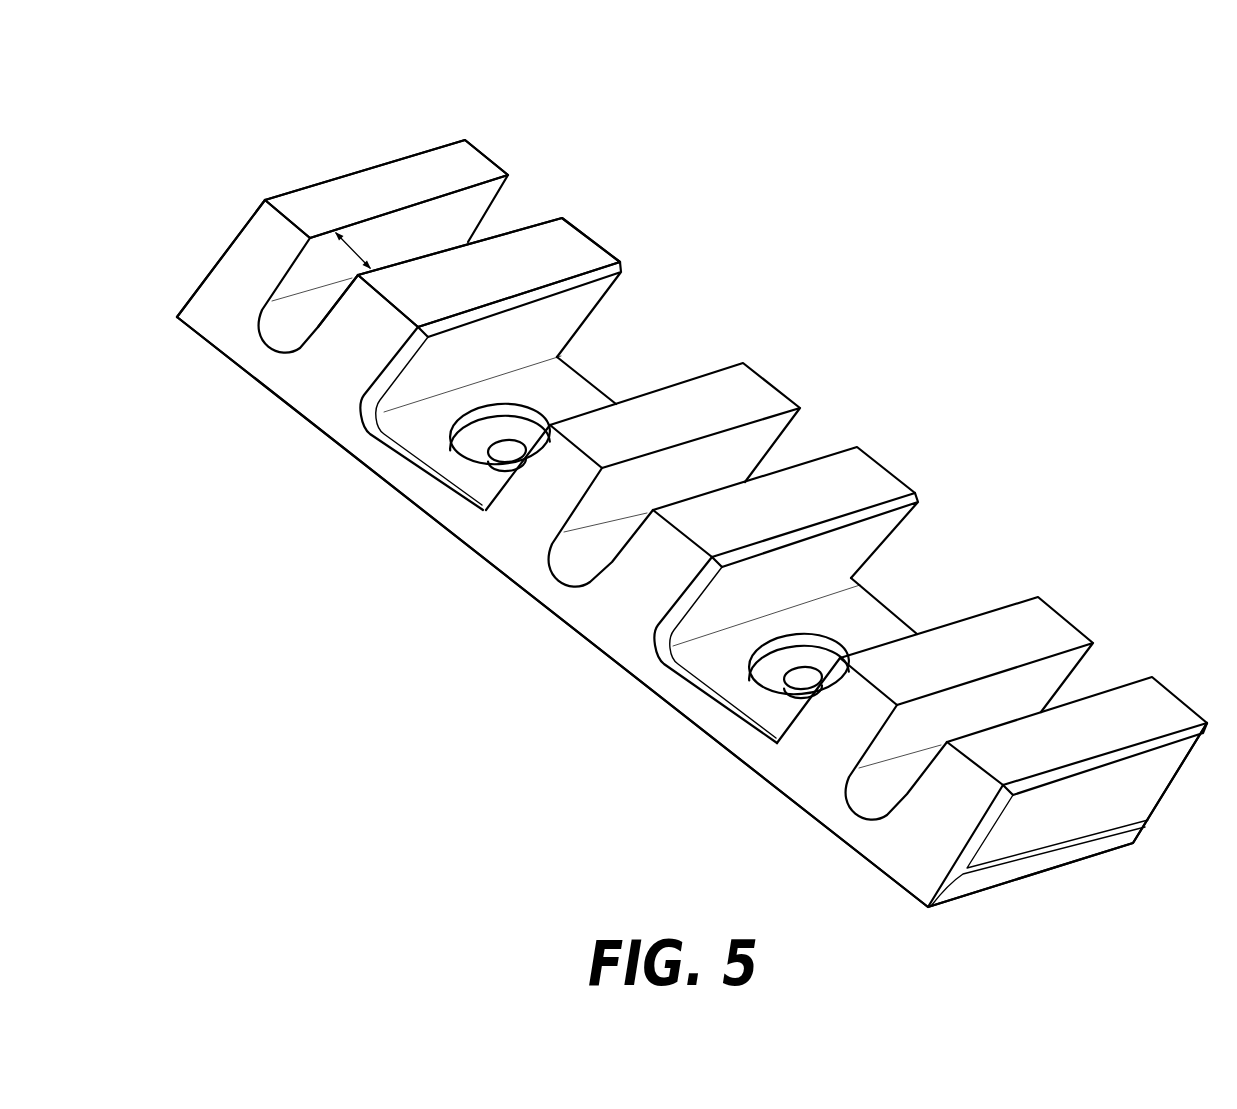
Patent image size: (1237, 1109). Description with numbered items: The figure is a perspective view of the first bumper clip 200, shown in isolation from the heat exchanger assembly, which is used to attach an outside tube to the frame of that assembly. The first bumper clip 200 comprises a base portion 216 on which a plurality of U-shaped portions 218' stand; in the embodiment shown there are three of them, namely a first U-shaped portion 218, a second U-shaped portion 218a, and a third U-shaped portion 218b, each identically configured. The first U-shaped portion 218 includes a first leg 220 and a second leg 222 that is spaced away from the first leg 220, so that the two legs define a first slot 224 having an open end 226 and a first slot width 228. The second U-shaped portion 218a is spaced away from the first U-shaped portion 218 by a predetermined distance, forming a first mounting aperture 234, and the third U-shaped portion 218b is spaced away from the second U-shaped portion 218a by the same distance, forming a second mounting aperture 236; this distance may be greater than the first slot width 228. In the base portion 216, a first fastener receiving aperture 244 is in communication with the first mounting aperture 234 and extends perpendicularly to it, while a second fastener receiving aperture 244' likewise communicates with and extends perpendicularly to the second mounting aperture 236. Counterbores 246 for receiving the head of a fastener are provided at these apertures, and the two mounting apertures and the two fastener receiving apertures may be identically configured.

The first bumper clip 200 is at (795, 267).
The base portion 216 is at (475, 548).
The first U-shaped portion 218 is at (386, 156).
The plurality of U-shaped portions 218' is at (793, 496).
The second U-shaped portion 218a is at (777, 387).
The third U-shaped portion 218b is at (1071, 615).
The first leg 220 is at (303, 187).
The second leg 222 is at (597, 235).
The first slot 224 is at (513, 207).
The open end 226 is at (530, 210).
The first slot width 228 is at (360, 250).
The first mounting aperture 234 is at (653, 357).
The second mounting aperture 236 is at (935, 570).
The first fastener receiving aperture 244 is at (458, 479).
The second fastener receiving aperture 244' is at (713, 664).
The counterbores 246 is at (507, 428).